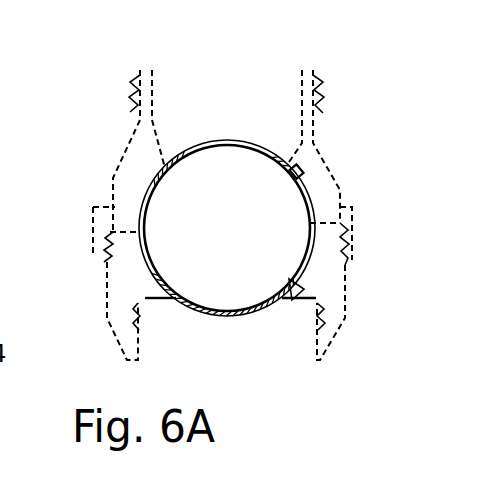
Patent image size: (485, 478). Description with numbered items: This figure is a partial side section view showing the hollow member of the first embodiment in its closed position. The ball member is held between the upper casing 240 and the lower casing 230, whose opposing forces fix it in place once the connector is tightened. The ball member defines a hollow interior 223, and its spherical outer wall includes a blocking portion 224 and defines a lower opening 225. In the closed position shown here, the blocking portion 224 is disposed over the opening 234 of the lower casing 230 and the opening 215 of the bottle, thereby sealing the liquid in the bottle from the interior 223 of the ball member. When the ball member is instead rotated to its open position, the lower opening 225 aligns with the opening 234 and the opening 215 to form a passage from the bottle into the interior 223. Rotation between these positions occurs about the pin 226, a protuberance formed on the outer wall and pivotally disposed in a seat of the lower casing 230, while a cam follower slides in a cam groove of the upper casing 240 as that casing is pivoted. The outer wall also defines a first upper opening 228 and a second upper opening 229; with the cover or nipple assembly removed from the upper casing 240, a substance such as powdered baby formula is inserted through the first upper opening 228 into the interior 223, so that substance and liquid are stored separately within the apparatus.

The first upper opening 228 is at (232, 138).
The hollow interior 223 is at (258, 223).
The upper casing 240 is at (125, 165).
The second upper opening 229 is at (139, 226).
The lower casing 230 is at (124, 295).
The lower opening 225 is at (310, 250).
The pin 226 is at (303, 290).
The blocking portion 224 is at (236, 314).
The opening of the bottle 215 is at (198, 335).
The opening 234 is at (198, 335).